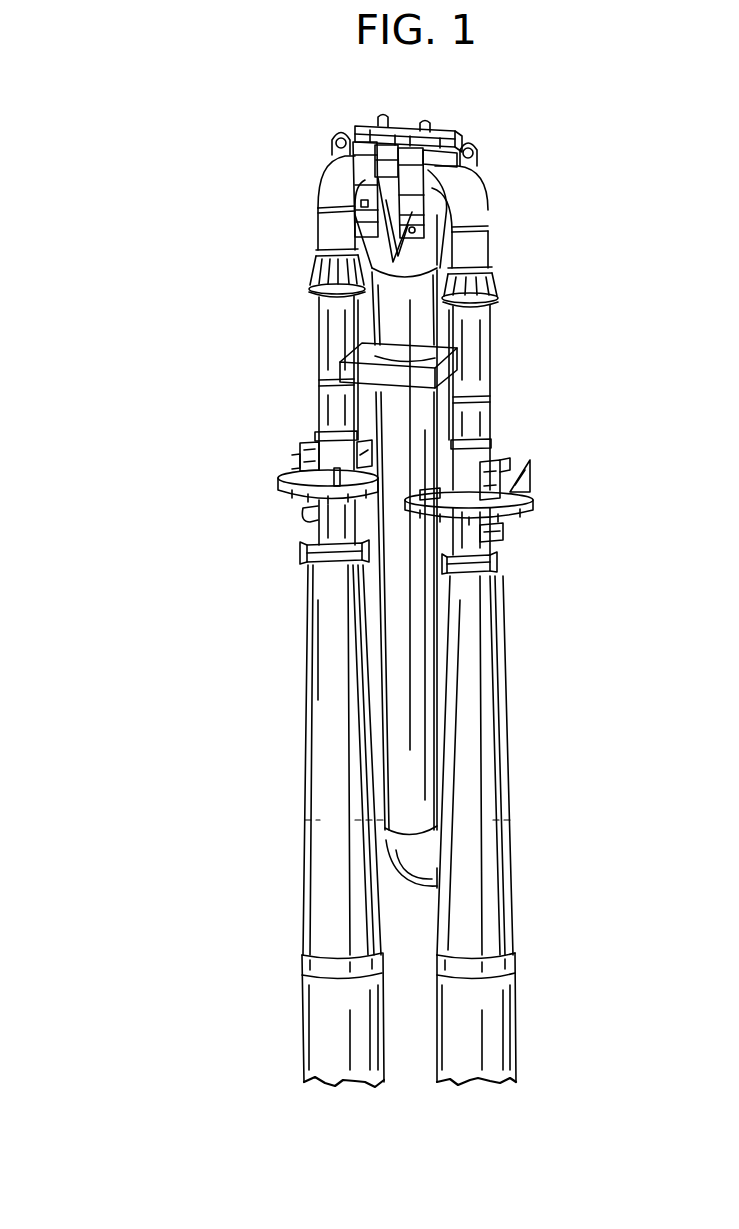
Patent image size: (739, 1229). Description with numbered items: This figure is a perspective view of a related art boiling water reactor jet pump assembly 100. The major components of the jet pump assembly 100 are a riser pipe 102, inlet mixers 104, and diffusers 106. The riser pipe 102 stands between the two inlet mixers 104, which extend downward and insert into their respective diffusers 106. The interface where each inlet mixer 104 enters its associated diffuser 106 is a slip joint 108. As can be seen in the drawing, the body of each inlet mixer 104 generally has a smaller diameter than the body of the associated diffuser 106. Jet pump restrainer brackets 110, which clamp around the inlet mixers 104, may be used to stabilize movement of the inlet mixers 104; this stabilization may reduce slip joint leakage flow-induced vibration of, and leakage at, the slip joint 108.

The jet pump assembly 100 is at (222, 165).
The riser pipe 102 is at (398, 649).
The inlet mixer 104 is at (473, 363).
The diffuser 106 is at (480, 668).
The slip joint 108 is at (472, 563).
The jet pump restrainer bracket 110 is at (548, 445).